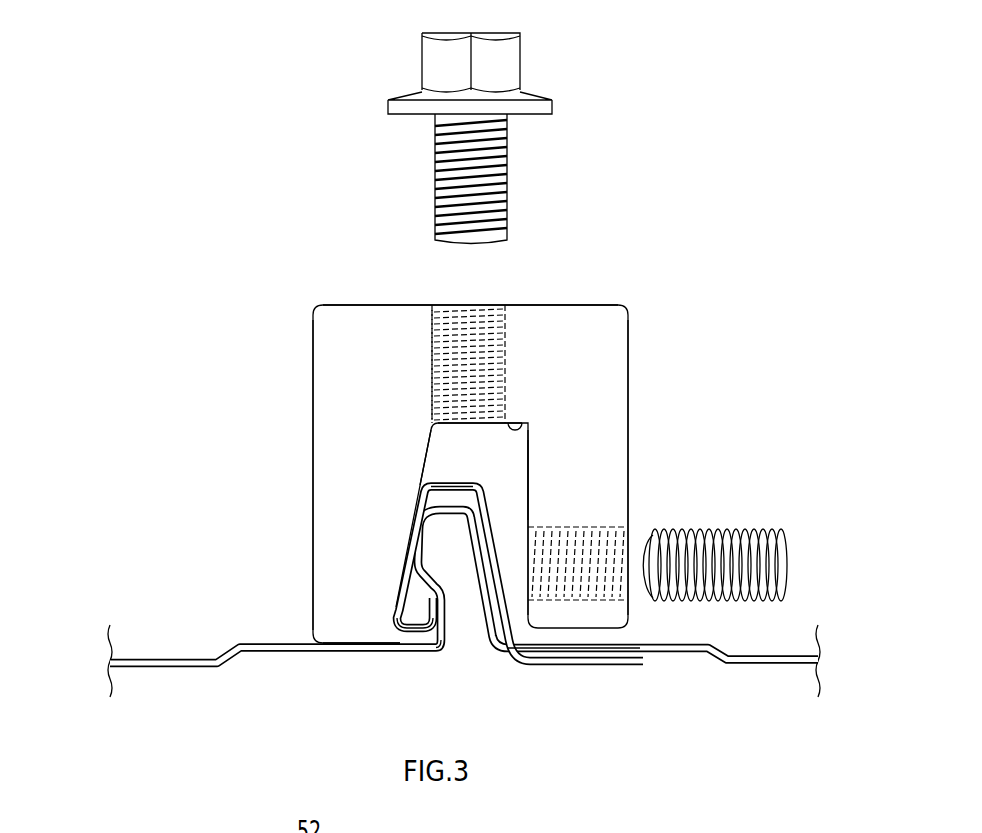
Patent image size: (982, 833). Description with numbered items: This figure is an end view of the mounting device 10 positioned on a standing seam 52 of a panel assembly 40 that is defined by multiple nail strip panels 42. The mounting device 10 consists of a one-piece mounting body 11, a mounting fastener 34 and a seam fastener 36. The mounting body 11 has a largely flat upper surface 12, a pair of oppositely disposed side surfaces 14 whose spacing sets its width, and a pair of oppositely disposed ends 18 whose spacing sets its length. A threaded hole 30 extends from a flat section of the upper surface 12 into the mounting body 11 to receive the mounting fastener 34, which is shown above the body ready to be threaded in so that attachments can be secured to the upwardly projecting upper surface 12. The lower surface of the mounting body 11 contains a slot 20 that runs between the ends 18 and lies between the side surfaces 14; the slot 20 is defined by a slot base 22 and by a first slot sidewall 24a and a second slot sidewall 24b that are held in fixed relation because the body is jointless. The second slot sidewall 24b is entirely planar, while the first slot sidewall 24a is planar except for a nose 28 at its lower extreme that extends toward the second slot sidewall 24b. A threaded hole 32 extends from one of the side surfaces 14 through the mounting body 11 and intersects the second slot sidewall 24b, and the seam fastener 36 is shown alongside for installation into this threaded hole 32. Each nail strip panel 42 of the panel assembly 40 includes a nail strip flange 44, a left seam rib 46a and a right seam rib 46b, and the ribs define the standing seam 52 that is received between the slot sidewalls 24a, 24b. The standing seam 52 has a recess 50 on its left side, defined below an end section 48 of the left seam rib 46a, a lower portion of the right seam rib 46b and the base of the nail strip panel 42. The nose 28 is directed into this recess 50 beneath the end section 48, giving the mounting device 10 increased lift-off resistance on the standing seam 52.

The mounting device 10 is at (233, 172).
The mounting body 11 is at (650, 312).
The upper surface 12 is at (555, 303).
The side surfaces 14 is at (312, 485).
The ends 18 is at (372, 371).
The slot 20 is at (481, 463).
The slot base 22 is at (513, 424).
The first slot sidewall 24a is at (430, 458).
The second slot sidewall 24b is at (528, 484).
The nose 28 is at (407, 643).
The threaded hole 30 is at (433, 387).
The threaded hole 32 is at (575, 527).
The mounting fastener 34 is at (520, 62).
The seam fastener 36 is at (712, 527).
The panel assembly 40 is at (189, 711).
The nail strip panel 42 is at (277, 653).
The nail strip flange 44 is at (575, 665).
The left seam rib 46a is at (443, 493).
The right seam rib 46b is at (447, 518).
The end section 48 is at (417, 615).
The recess 50 is at (420, 645).
The standing seam 52 is at (467, 473).